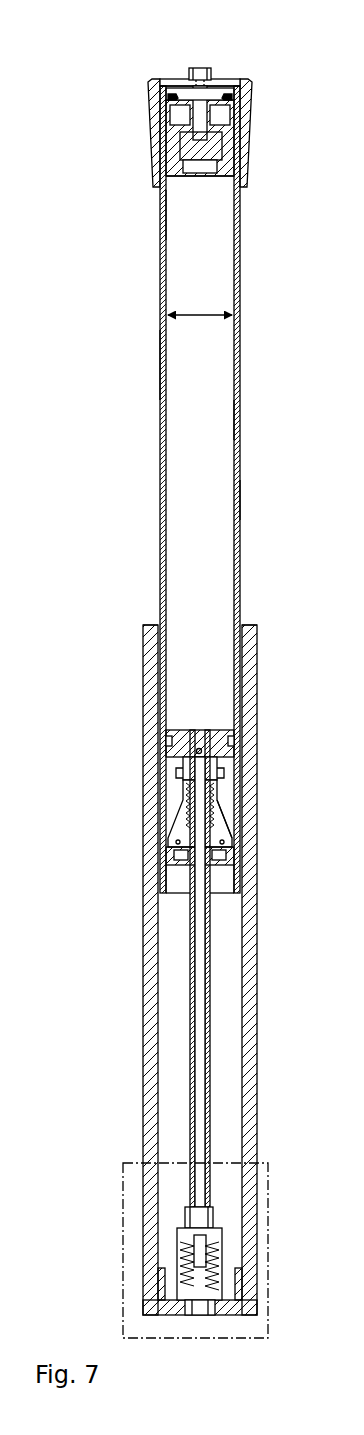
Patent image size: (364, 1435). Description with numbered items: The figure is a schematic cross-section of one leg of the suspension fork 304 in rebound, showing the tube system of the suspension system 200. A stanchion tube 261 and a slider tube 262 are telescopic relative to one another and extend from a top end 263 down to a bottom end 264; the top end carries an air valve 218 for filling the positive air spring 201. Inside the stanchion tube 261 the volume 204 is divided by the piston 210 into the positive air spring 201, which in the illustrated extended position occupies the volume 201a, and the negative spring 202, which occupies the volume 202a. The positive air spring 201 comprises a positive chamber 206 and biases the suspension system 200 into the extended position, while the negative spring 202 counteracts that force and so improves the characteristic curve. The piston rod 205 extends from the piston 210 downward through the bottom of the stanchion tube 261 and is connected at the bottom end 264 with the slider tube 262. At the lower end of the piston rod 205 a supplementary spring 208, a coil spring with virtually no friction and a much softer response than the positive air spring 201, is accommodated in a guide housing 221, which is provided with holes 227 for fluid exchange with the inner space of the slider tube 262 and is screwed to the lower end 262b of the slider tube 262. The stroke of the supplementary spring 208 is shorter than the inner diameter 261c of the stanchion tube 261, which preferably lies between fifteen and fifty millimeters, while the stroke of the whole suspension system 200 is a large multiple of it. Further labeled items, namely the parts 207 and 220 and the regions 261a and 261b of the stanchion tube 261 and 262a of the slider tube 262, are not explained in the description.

The suspension system 200 is at (119, 504).
The positive air spring 201 is at (174, 600).
The volume of positive air spring 201a is at (215, 220).
The negative spring 202 is at (175, 806).
The volume of negative spring 202a is at (225, 795).
The volume of stanchion tube 204 is at (241, 420).
The piston rod 205 is at (210, 1120).
The positive chamber 206 is at (240, 497).
The piston 207 is at (163, 776).
The supplementary spring 208 is at (174, 1274).
The piston 210 is at (204, 730).
The air valve 218 is at (195, 75).
The compression chamber 220 is at (348, 856).
The guide housing 221 is at (348, 676).
The holes 227 is at (348, 998).
The stanchion tube 261 is at (160, 360).
The first tube upper end cap 261a is at (163, 97).
The first tube lower end plate 261b is at (160, 848).
The inner diameter of stanchion tube 261c is at (204, 312).
The slider tube 262 is at (150, 1045).
The second tube upper end 262a is at (143, 627).
The lower end of slider tube 262b is at (145, 1313).
The top end 263 is at (270, 79).
The bottom end 264 is at (272, 1318).
The suspension fork 304 is at (114, 79).